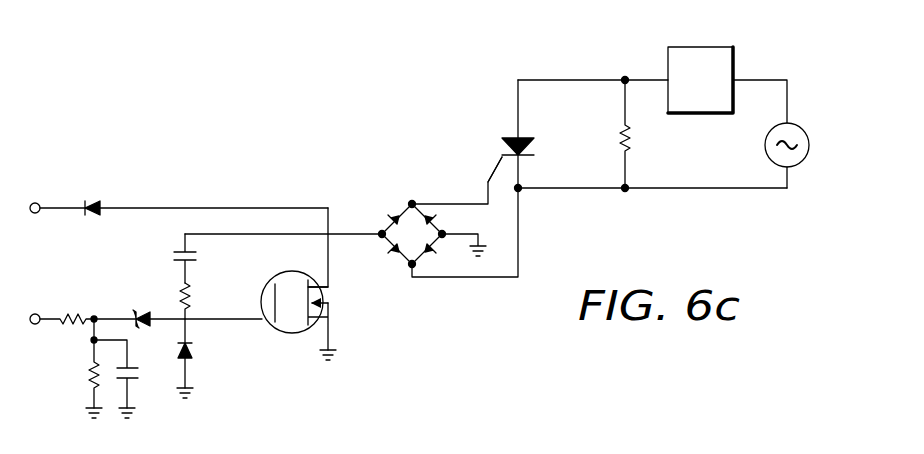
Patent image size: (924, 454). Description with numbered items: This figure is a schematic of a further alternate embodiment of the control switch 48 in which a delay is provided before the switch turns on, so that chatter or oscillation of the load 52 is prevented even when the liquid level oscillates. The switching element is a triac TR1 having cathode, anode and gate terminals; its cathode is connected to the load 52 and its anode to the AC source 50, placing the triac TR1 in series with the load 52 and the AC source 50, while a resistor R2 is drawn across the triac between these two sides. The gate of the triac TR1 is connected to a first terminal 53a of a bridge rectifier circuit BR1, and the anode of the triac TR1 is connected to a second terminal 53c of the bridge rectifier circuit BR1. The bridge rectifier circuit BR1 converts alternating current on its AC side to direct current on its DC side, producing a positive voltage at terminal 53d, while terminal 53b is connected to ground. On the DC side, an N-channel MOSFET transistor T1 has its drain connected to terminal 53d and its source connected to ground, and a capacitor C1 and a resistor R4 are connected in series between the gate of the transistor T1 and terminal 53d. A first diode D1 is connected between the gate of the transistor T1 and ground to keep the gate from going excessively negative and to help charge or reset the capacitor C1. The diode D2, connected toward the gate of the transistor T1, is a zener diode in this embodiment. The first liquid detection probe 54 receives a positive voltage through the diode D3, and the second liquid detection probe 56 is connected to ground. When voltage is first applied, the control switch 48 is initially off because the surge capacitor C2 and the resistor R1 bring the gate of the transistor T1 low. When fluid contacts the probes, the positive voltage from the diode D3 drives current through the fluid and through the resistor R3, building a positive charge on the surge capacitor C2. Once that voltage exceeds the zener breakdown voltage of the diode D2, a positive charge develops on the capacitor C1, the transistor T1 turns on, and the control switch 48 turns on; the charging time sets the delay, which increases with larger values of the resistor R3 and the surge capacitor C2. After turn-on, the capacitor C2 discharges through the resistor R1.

The control switch 48 is at (626, 102).
The AC source 50 is at (808, 148).
The load 52 is at (735, 62).
The first terminal of the bridge rectifier circuit 53a is at (412, 204).
The terminal of the bridge rectifier circuit 53b is at (445, 232).
The second terminal of the bridge rectifier circuit 53c is at (412, 266).
The terminal of the bridge rectifier circuit 53d is at (382, 236).
The first liquid detection probe 54 is at (35, 202).
The second liquid detection probe 56 is at (35, 325).
The triac TR1 is at (503, 134).
The bridge rectifier circuit BR1 is at (450, 217).
The N-channel MOSFET transistor T1 is at (296, 303).
The resistor R1 is at (84, 368).
The resistor R2 is at (612, 134).
The resistor R3 is at (88, 306).
The resistor R4 is at (201, 301).
The capacitor C1 is at (199, 258).
The surge capacitor C2 is at (132, 379).
The first diode D1 is at (202, 358).
The zener diode D2 is at (197, 308).
The diode D3 is at (184, 195).